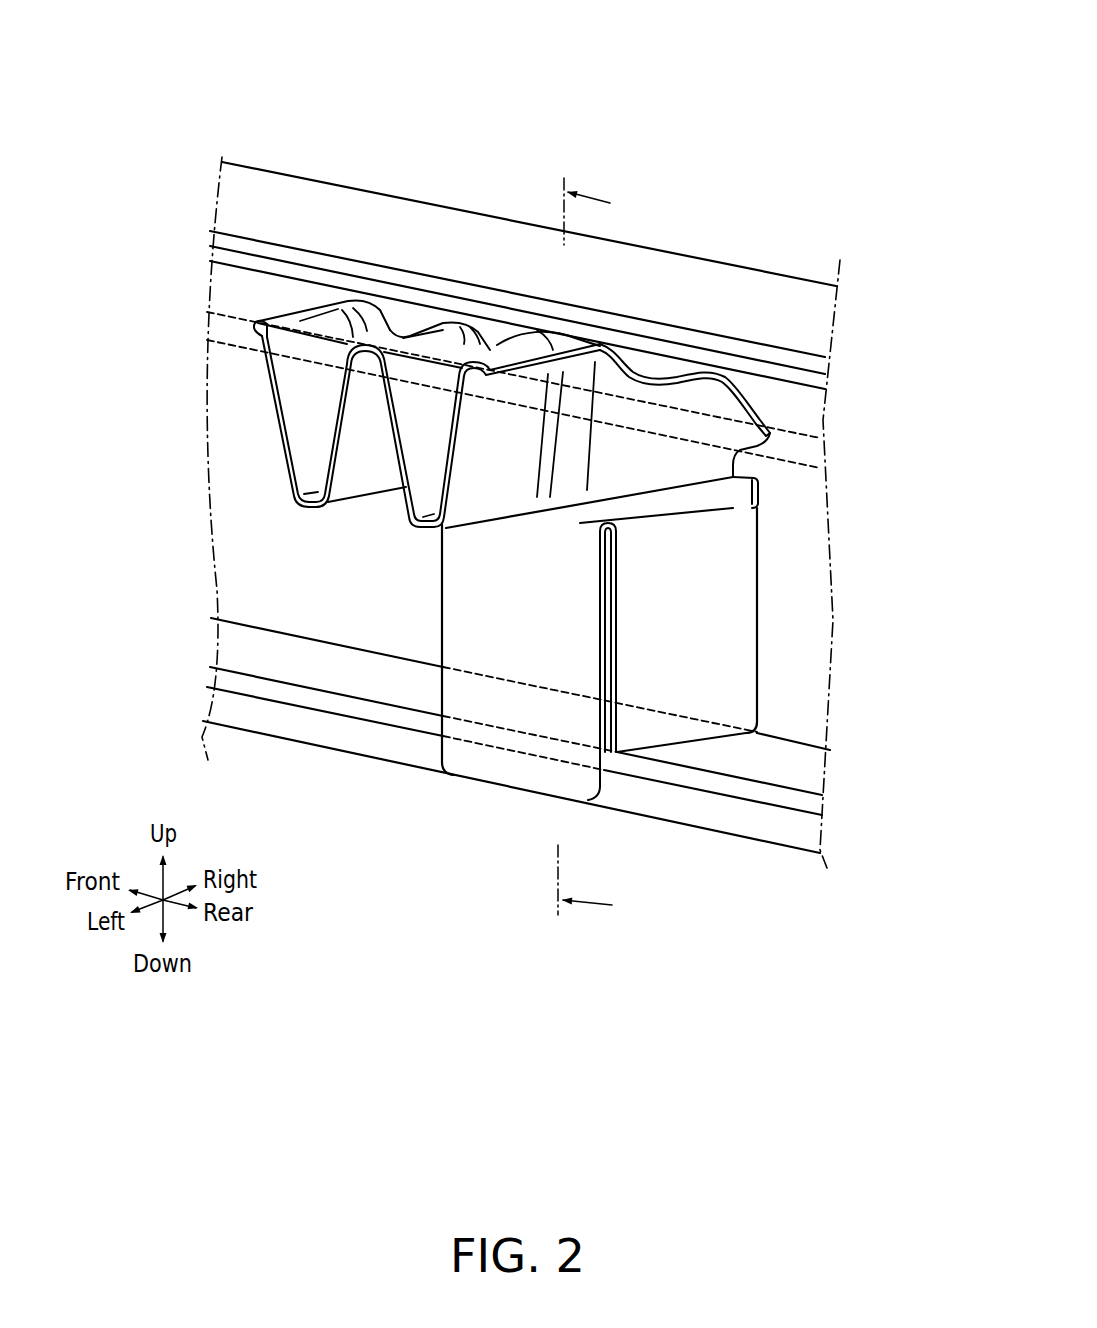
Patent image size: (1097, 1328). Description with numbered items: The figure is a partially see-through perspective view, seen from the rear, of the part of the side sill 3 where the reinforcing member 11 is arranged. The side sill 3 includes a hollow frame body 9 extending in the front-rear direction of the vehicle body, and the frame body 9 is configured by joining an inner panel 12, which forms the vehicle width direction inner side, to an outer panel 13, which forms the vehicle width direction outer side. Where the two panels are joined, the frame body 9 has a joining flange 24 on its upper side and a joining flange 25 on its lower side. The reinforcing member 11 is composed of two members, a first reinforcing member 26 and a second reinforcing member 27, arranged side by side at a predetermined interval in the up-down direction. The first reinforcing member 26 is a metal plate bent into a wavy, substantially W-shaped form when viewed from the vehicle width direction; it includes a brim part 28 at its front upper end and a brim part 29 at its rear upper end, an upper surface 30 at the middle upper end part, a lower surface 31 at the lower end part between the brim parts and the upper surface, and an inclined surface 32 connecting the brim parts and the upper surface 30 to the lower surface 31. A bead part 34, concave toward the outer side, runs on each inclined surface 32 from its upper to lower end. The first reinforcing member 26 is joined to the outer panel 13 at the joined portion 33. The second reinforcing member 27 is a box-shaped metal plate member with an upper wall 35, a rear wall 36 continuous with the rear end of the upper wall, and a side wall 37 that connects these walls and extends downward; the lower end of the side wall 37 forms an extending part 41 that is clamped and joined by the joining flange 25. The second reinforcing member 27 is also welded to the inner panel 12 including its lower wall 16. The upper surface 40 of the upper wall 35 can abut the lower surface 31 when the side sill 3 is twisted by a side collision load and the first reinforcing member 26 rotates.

The side sill 3 is at (196, 132).
The frame body 9 is at (507, 458).
The reinforcing member 11 is at (112, 513).
The inner panel 12 is at (364, 622).
The outer panel 13 is at (220, 294).
The lower wall 16 is at (773, 756).
The joining flange 24 is at (246, 162).
The joining flange 25 is at (284, 748).
The first reinforcing member 26 is at (345, 508).
The second reinforcing member 27 is at (438, 586).
The brim part 28 is at (302, 313).
The brim part 29 is at (557, 337).
The upper surface 30 is at (403, 336).
The lower surface 31 is at (613, 500).
The inclined surface 32 is at (342, 414).
The joined portion 33 is at (528, 345).
The bead part 34 is at (378, 321).
The upper wall 35 is at (676, 511).
The rear wall 36 is at (727, 613).
The side wall 37 is at (515, 638).
The upper surface 40 is at (819, 509).
The extending part 41 is at (580, 783).